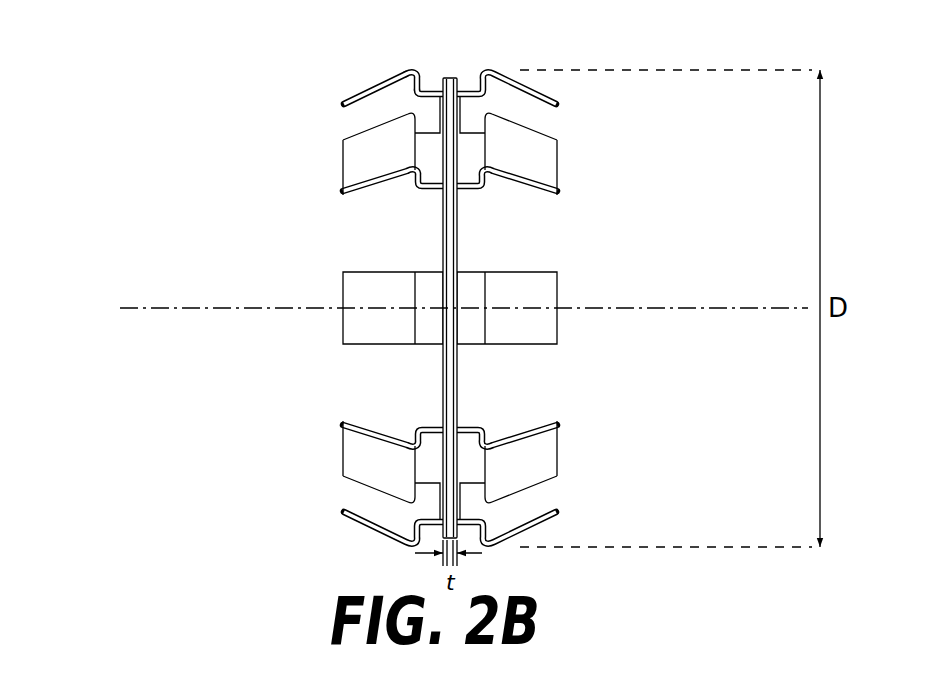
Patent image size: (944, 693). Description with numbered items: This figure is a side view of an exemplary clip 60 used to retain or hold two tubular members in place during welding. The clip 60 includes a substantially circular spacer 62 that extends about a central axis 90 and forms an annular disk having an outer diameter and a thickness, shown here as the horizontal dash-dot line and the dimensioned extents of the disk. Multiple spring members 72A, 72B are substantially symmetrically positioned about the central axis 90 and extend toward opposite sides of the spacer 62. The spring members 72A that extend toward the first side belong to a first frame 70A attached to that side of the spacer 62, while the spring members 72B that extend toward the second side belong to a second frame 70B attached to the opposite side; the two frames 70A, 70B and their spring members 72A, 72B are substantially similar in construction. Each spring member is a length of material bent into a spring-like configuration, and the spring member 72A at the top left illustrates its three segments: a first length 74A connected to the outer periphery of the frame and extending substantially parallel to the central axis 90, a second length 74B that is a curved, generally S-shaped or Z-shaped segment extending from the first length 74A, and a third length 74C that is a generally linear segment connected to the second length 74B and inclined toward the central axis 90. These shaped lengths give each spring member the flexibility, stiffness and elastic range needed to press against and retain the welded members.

The clip 60 is at (364, 272).
The spacer 62 is at (450, 78).
The first frame 70A is at (331, 272).
The second frame 70B is at (558, 307).
The spring members 72A is at (331, 272).
The spring members 72B is at (560, 515).
The first length 74A is at (430, 89).
The second length 74B is at (411, 70).
The third length 74C is at (358, 95).
The central axis 90 is at (725, 308).